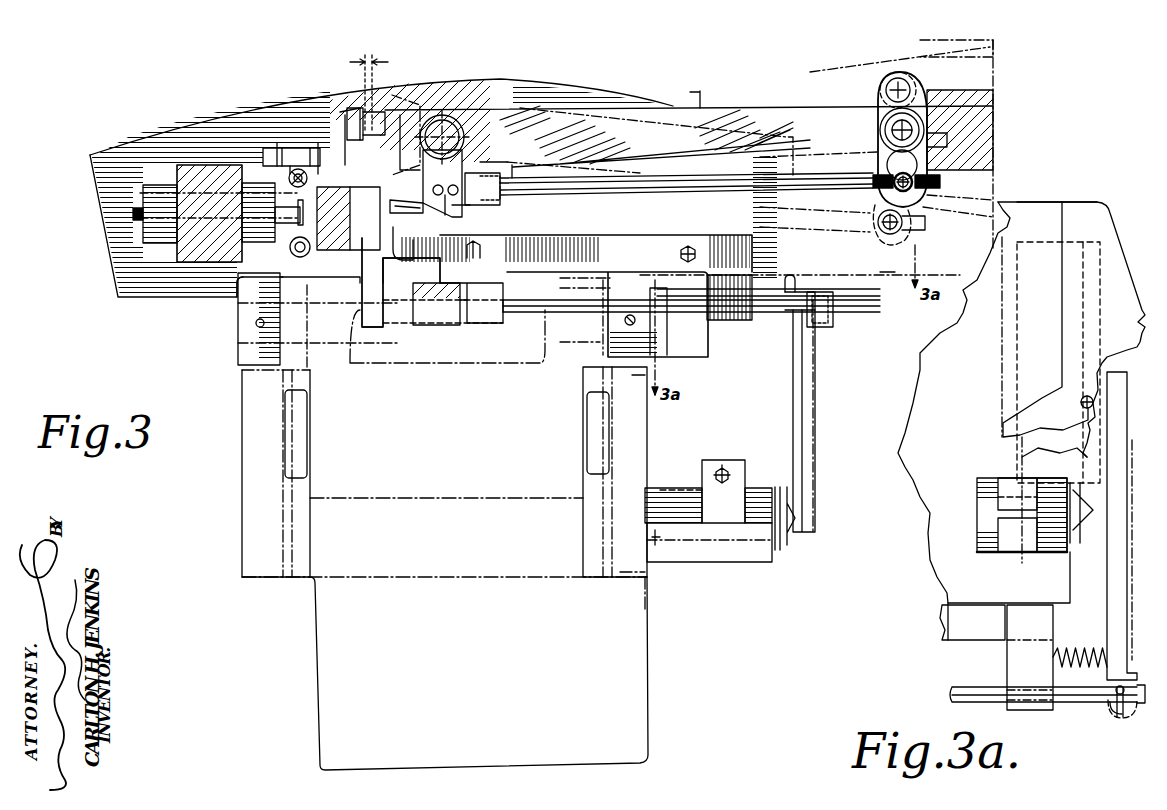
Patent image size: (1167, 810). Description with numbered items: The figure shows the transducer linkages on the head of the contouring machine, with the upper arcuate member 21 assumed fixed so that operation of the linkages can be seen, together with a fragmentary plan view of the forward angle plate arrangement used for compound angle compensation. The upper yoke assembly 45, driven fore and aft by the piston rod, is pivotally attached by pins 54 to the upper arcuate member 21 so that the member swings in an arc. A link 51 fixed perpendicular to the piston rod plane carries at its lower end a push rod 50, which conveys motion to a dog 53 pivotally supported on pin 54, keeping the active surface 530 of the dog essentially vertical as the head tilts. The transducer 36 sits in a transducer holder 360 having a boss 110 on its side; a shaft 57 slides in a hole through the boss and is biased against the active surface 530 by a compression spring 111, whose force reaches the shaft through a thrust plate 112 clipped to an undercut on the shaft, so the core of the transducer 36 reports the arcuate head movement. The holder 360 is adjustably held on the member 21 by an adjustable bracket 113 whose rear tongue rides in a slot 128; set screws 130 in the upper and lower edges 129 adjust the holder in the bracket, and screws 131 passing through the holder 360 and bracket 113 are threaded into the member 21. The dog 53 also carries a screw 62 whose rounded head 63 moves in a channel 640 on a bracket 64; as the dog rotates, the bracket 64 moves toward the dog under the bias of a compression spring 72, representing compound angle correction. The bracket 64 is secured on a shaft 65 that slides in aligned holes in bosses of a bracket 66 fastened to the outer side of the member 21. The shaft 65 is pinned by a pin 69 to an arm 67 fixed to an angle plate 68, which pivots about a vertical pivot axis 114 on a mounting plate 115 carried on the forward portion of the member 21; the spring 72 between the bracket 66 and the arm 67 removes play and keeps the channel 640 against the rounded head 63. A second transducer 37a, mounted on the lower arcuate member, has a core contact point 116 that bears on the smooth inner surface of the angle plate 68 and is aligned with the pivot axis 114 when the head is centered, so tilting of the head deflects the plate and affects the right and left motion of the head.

In FIG. 3, the upper arcuate member 21 is at (180, 298).
In FIG. 3A, the upper arcuate member 21 is at (977, 280).
In FIG. 3, the transducer 36 is at (243, 167).
In FIG. 3, the transducer holder 360 is at (227, 167).
In FIG. 3, the slot 128 is at (118, 228).
In FIG. 3, the upper and lower edges 129 is at (265, 150).
In FIG. 3, the set screws 130 is at (277, 148).
In FIG. 3, the boss 110 is at (260, 260).
In FIG. 3, the shaft 57 is at (309, 213).
In FIG. 3, the compression spring 111 is at (366, 225).
In FIG. 3, the thrust plate 112 is at (401, 277).
In FIG. 3, the adjustable bracket 113 is at (265, 270).
In FIG. 3, the screws 131 is at (240, 272).
In FIG. 3, the channel 640 is at (355, 110).
In FIG. 3, the screw 62 is at (379, 92).
In FIG. 3, the rounded head 63 is at (363, 137).
In FIG. 3, the pin 54 is at (443, 115).
In FIG. 3, the dog 53 is at (462, 217).
In FIG. 3, the active surface 530 is at (428, 218).
In FIG. 3, the push rod 50 is at (533, 193).
In FIG. 3, the upper yoke assembly 45 is at (709, 96).
In FIG. 3, the link 51 is at (882, 130).
In FIG. 3, the bracket 64 is at (473, 327).
In FIG. 3, the shaft 65 is at (675, 312).
In FIG. 3A, the shaft 65 is at (990, 688).
In FIG. 3, the bracket 66 is at (725, 320).
In FIG. 3A, the bracket 66 is at (945, 630).
In FIG. 3, the vertical pivot axis 114 is at (795, 279).
In FIG. 3A, the vertical pivot axis 114 is at (1078, 402).
In FIG. 3, the mounting plate 115 is at (878, 296).
In FIG. 3A, the mounting plate 115 is at (1108, 192).
In FIG. 3, the pin 69 is at (813, 327).
In FIG. 3A, the pin 69 is at (1120, 712).
In FIG. 3, the angle plate 68 is at (810, 420).
In FIG. 3A, the angle plate 68 is at (1093, 438).
In FIG. 3, the transducer 37a is at (673, 488).
In FIG. 3A, the transducer 37a is at (988, 527).
In FIG. 3A, the contact point 116 is at (1103, 472).
In FIG. 3A, the compression spring 72 is at (1095, 650).
In FIG. 3A, the arm 67 is at (1106, 706).